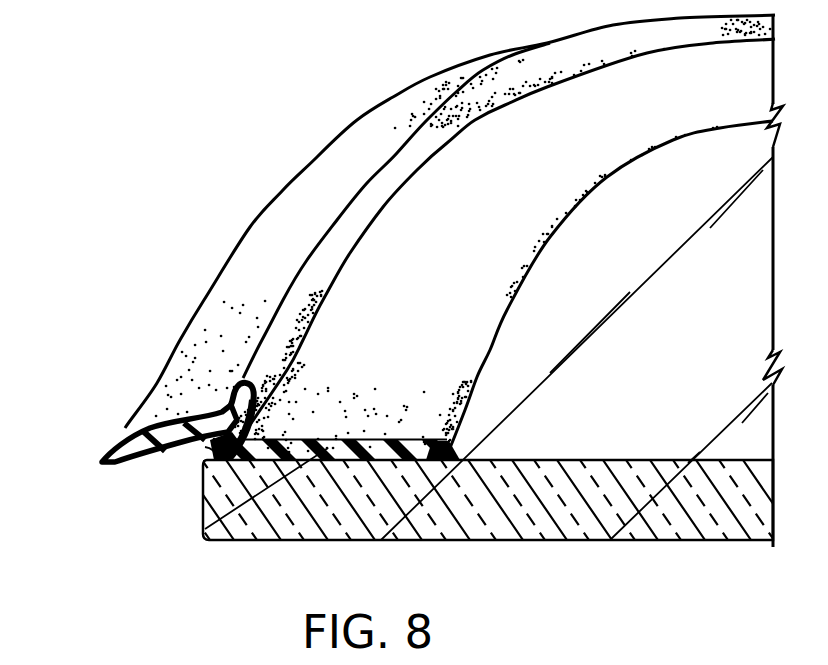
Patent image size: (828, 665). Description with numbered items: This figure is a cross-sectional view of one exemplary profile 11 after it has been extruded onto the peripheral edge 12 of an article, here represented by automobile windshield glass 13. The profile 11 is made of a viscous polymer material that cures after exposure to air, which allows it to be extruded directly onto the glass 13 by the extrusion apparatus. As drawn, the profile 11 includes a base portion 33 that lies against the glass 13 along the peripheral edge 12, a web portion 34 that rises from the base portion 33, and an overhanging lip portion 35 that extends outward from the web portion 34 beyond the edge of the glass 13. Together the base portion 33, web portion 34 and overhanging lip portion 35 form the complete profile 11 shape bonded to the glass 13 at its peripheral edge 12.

The profile 11 is at (495, 323).
The peripheral edge 12 is at (210, 447).
The automobile windshield glass 13 is at (636, 547).
The base portion 33 is at (327, 450).
The web portion 34 is at (235, 390).
The overhanging lip portion 35 is at (150, 426).